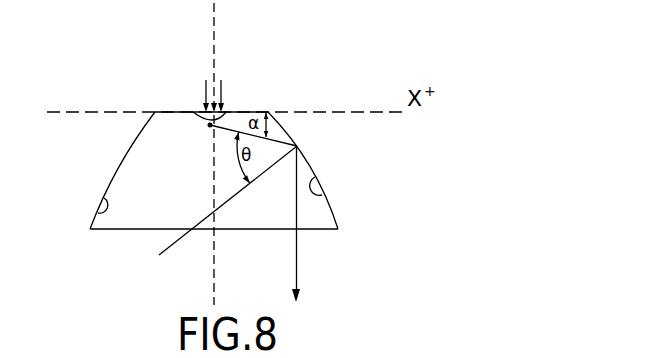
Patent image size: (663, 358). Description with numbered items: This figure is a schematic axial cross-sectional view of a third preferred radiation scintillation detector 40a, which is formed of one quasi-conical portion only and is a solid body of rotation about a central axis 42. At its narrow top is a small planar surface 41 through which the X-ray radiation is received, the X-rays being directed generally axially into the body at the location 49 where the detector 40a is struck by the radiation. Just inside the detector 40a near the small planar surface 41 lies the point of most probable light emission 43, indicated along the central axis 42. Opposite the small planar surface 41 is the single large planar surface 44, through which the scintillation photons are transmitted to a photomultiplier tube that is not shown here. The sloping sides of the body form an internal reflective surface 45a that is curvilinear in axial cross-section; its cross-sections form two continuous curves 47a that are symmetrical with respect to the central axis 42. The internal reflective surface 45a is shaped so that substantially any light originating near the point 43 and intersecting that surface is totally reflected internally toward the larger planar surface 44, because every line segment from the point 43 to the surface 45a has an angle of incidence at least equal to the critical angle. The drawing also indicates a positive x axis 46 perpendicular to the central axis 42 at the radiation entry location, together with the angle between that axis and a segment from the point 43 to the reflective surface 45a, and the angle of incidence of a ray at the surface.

The scintillation detector 40a is at (239, 178).
The small planar surface 41 is at (167, 110).
The central axis 42 is at (212, 166).
The point of most probable light emission 43 is at (228, 110).
The large planar surface 44 is at (130, 230).
The internal reflective surface 45a is at (104, 198).
The reference X axis 46 is at (333, 111).
The continuous curves 47a is at (315, 177).
The location where the detector is struck by the radiation 49 is at (196, 111).